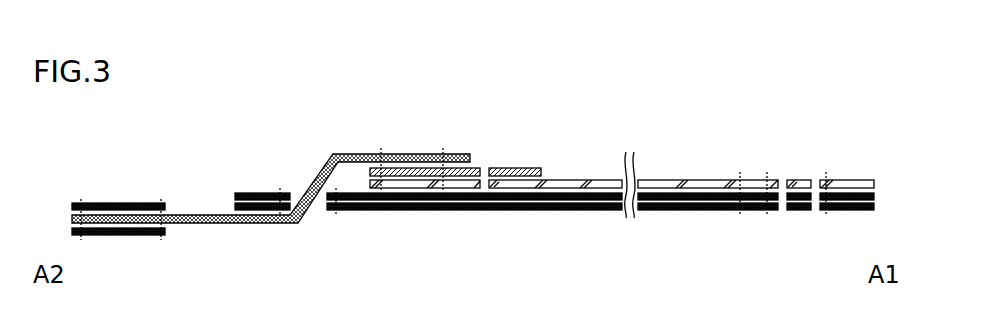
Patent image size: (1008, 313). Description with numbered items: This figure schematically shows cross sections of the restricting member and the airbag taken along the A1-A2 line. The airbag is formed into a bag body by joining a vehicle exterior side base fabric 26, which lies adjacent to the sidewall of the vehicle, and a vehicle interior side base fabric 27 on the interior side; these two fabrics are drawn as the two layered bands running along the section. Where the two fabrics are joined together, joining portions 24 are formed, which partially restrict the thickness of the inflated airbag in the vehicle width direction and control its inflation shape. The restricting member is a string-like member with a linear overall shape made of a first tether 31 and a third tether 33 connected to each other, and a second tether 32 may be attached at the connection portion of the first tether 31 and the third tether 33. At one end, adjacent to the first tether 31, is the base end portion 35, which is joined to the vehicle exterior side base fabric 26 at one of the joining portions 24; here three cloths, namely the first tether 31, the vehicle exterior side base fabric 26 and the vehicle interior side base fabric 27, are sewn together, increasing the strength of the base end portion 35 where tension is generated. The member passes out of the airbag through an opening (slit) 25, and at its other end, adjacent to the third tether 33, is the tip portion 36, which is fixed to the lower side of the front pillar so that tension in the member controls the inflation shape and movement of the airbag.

The joining portion 24 is at (802, 220).
The opening (slit) 25 is at (318, 216).
The vehicle exterior side base fabric 26 is at (248, 199).
The vehicle interior side base fabric 27 is at (250, 210).
The first tether 31 is at (682, 180).
The second tether 32 is at (474, 169).
The third tether 33 is at (323, 175).
The base end portion 35 is at (798, 168).
The tip portion 36 is at (103, 199).